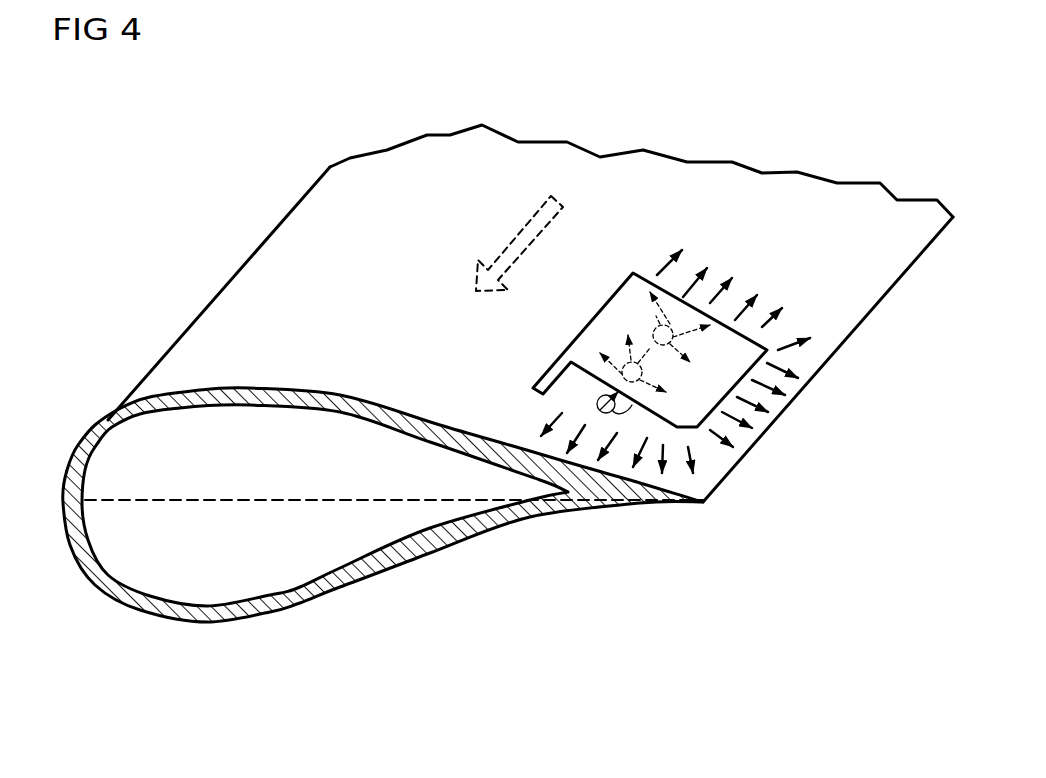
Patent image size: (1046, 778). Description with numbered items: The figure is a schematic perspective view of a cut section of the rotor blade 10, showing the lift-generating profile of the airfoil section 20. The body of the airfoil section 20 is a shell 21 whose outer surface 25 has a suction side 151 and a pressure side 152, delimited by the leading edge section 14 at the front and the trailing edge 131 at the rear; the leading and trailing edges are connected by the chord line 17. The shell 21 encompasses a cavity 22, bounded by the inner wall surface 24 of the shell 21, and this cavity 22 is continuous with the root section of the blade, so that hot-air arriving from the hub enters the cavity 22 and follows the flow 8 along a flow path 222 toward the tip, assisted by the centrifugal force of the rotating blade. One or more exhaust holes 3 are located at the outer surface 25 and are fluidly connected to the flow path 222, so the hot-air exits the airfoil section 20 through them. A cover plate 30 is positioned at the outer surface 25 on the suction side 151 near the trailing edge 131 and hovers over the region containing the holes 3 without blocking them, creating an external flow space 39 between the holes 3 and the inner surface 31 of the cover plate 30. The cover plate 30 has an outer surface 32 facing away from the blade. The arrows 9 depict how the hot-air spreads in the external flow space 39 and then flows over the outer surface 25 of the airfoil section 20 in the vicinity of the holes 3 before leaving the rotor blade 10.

The exhaust holes 3 is at (636, 410).
The flow of hot-air 8 is at (540, 232).
The arrows depicting hot-air flow 9 is at (697, 286).
The rotor blade 10 is at (383, 402).
The leading edge section 14 is at (213, 304).
The chord line 17 is at (197, 504).
The airfoil section 20 is at (499, 365).
The shell 21 is at (328, 405).
The cavity 22 is at (328, 564).
The inner surface of shell 24 is at (243, 408).
The outer surface 25 is at (430, 218).
The cover plate 30 is at (544, 368).
The inner surface of the cover plate 31 is at (560, 380).
The outer surface of the cover plate 32 is at (738, 334).
The external flow space 39 is at (628, 438).
The trailing edge 131 is at (828, 366).
The suction side 151 is at (623, 172).
The pressure side 152 is at (232, 624).
The flow path 222 is at (394, 521).